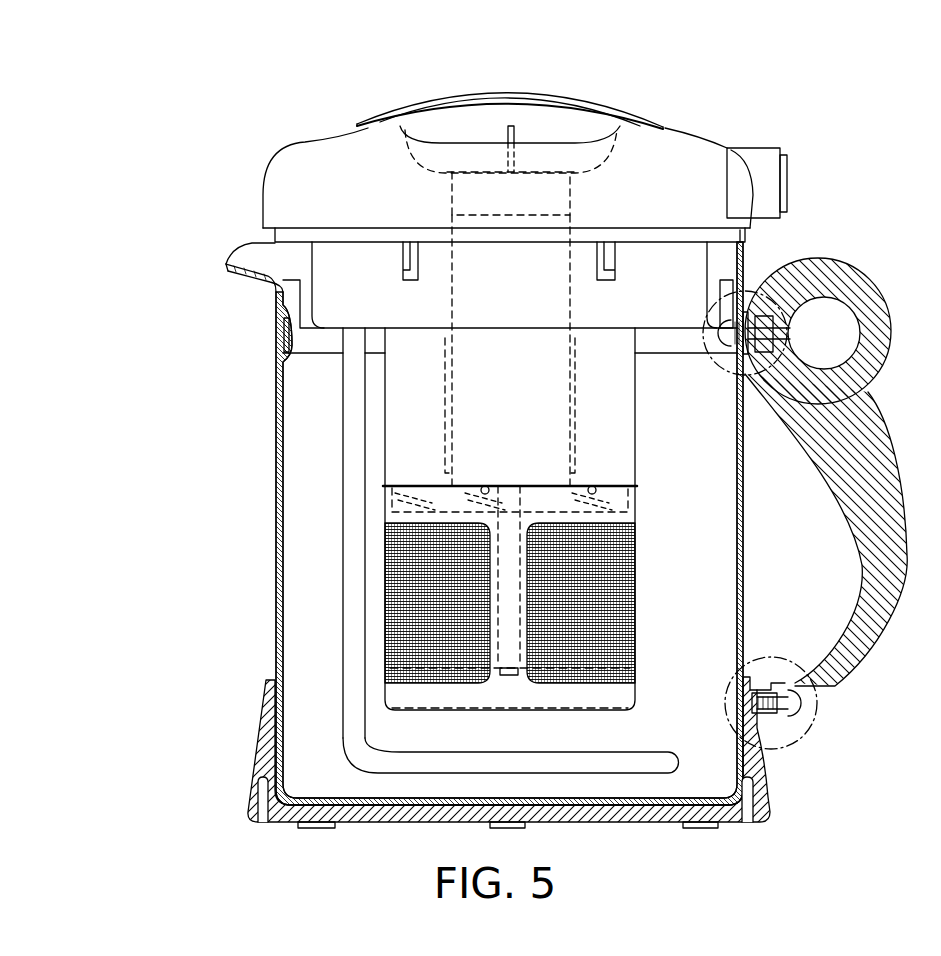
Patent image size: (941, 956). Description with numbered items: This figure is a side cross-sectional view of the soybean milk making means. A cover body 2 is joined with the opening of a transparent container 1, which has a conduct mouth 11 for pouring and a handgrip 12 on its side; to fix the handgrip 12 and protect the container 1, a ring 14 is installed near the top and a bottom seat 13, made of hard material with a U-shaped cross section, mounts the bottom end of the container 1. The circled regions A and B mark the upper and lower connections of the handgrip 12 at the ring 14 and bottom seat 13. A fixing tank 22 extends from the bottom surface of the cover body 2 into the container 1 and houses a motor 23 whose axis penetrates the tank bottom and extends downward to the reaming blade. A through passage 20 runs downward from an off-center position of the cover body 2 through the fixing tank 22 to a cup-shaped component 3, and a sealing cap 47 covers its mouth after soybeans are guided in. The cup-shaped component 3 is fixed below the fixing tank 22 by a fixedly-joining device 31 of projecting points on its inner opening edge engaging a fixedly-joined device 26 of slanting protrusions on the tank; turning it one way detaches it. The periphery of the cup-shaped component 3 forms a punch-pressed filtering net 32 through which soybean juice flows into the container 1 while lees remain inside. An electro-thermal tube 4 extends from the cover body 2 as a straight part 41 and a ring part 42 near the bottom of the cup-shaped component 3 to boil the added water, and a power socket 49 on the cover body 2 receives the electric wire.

The container 1 is at (268, 558).
The cover body 2 is at (258, 172).
The cup-shaped component 3 is at (636, 560).
The electro-thermal tube 4 is at (430, 550).
The conduct mouth 11 is at (245, 268).
The handgrip 12 is at (862, 568).
The bottom seat 13 is at (262, 780).
The ring 14 is at (284, 336).
The through passage 20 is at (572, 293).
The fixing tank 22 is at (395, 420).
The motor 23 is at (445, 440).
The fixedly-joined device 26 is at (595, 490).
The fixedly-joining device 31 is at (637, 488).
The filtering net 32 is at (615, 582).
The straight part 41 is at (355, 677).
The ring part 42 is at (445, 755).
The sealing cap 47 is at (512, 136).
The power socket 49 is at (787, 179).
The upper fastener detail A is at (795, 326).
The lower fastener detail B is at (813, 730).